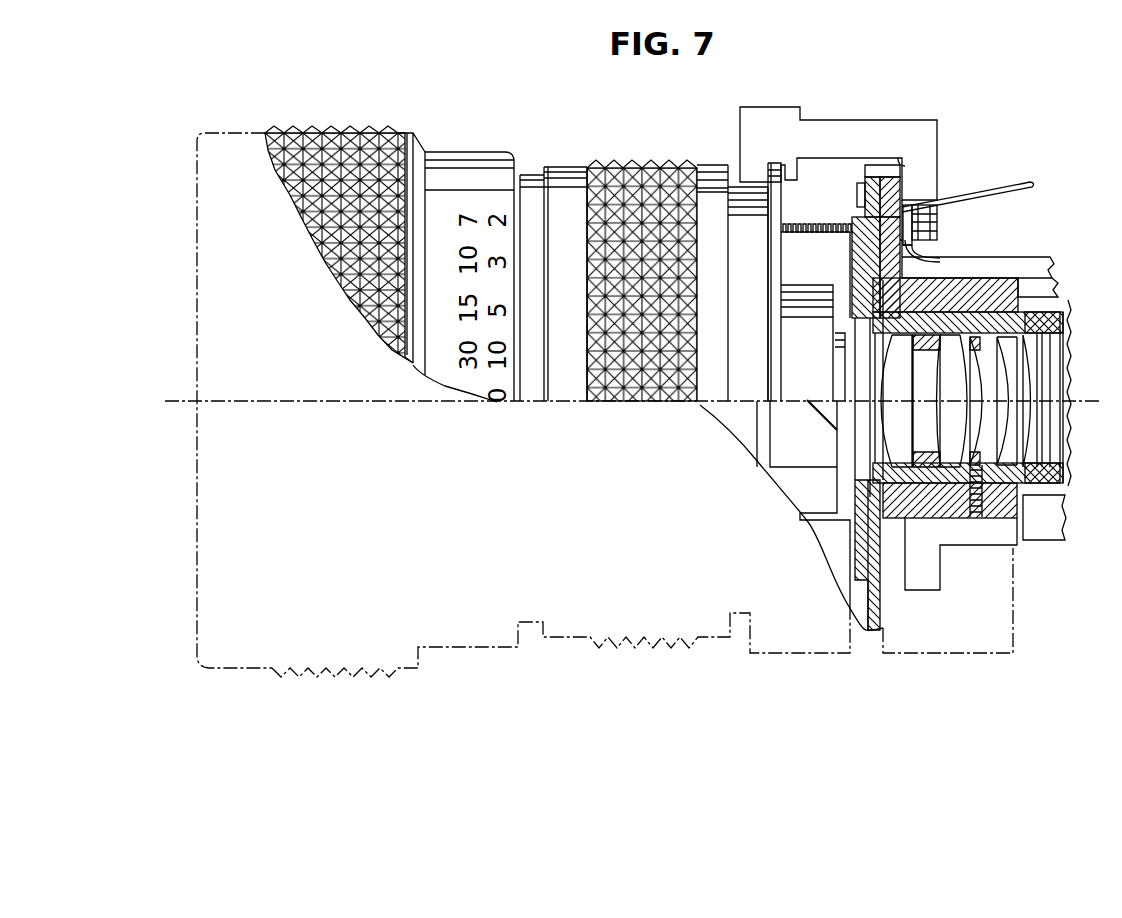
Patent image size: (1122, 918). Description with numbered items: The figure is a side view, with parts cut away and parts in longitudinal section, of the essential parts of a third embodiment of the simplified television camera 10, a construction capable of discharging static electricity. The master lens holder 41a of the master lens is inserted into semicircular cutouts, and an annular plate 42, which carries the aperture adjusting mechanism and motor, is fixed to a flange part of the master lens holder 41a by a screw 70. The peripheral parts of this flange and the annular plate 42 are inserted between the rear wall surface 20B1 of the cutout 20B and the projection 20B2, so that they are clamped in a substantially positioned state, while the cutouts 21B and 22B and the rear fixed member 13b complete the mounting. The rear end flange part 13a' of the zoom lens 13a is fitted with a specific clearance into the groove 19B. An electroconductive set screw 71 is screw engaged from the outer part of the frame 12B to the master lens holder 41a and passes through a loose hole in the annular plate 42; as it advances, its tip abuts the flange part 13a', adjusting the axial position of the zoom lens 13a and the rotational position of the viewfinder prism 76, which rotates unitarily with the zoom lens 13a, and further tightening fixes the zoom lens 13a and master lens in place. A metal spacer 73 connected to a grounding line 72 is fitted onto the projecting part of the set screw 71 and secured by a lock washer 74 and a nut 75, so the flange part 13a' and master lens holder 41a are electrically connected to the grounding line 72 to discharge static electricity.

The television camera 10 is at (480, 93).
The frame 12B is at (757, 106).
The zoom lens 13a is at (563, 261).
The rear end flange part 13a' is at (769, 505).
The rear fixed member 13b is at (1027, 492).
The groove 19B is at (770, 165).
The cutout 20B is at (873, 165).
The rear wall surface of cutout 20B1 is at (905, 157).
The projection 20B2 is at (795, 462).
The rear lens frame 21B is at (1030, 286).
The mount ring 22B is at (1053, 297).
The master lens holder 41a is at (940, 515).
The annular plate 42 is at (860, 548).
The screw 70 is at (857, 188).
The set screw 71 is at (820, 222).
The grounding line 72 is at (1005, 184).
The metal spacer 73 is at (910, 262).
The lock washer 74 is at (912, 255).
The nut 75 is at (933, 227).
The prism 76 is at (828, 412).